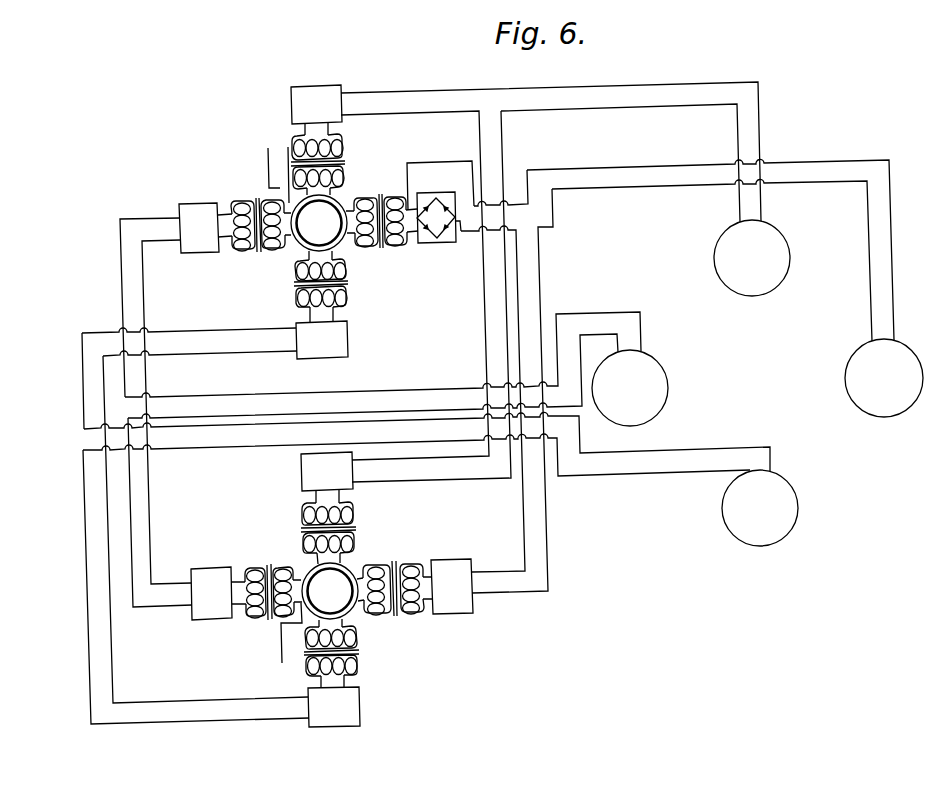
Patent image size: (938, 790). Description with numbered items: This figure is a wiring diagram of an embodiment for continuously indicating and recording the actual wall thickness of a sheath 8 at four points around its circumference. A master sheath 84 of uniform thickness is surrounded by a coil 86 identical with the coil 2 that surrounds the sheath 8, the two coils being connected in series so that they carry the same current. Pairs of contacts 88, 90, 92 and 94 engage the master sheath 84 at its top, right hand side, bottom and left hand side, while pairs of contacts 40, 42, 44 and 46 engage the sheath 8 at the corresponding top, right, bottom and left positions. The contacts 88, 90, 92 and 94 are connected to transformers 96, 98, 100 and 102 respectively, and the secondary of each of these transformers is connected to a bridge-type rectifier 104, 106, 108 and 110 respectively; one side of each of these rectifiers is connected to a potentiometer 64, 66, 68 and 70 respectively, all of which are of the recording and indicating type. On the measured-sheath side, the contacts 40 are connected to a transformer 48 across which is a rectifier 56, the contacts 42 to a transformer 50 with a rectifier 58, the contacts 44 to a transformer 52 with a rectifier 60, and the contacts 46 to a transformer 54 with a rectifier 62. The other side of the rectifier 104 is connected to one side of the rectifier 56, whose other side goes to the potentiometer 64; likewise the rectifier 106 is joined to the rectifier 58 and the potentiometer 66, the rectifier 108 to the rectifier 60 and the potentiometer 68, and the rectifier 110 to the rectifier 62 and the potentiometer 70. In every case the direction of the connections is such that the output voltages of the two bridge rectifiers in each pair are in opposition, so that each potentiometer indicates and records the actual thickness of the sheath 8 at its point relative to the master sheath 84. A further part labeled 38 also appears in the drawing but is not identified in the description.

The coil 2 is at (352, 565).
The sheath 8 is at (311, 608).
The shield 38 is at (275, 155).
The contacts 40 is at (333, 580).
The contacts 42 is at (357, 585).
The contacts 44 is at (333, 606).
The contacts 46 is at (329, 593).
The transformer 48 is at (350, 528).
The transformer 50 is at (400, 613).
The transformer 52 is at (355, 651).
The transformer 54 is at (268, 564).
The rectifier 56 is at (327, 471).
The rectifier 58 is at (452, 586).
The rectifier 60 is at (334, 707).
The rectifier 62 is at (211, 593).
The potentiometer 64 is at (752, 258).
The potentiometer 66 is at (884, 378).
The potentiometer 68 is at (760, 508).
The potentiometer 70 is at (630, 388).
The master sheath 84 is at (344, 195).
The coil 86 is at (342, 237).
The contacts 88 is at (311, 215).
The contacts 90 is at (329, 228).
The contacts 92 is at (314, 240).
The contacts 94 is at (292, 247).
The transformer 96 is at (343, 160).
The transformer 98 is at (395, 183).
The transformer 100 is at (345, 282).
The transformer 102 is at (257, 198).
The rectifier 104 is at (316, 104).
The rectifier 106 is at (447, 240).
The rectifier 108 is at (322, 340).
The rectifier 110 is at (199, 228).